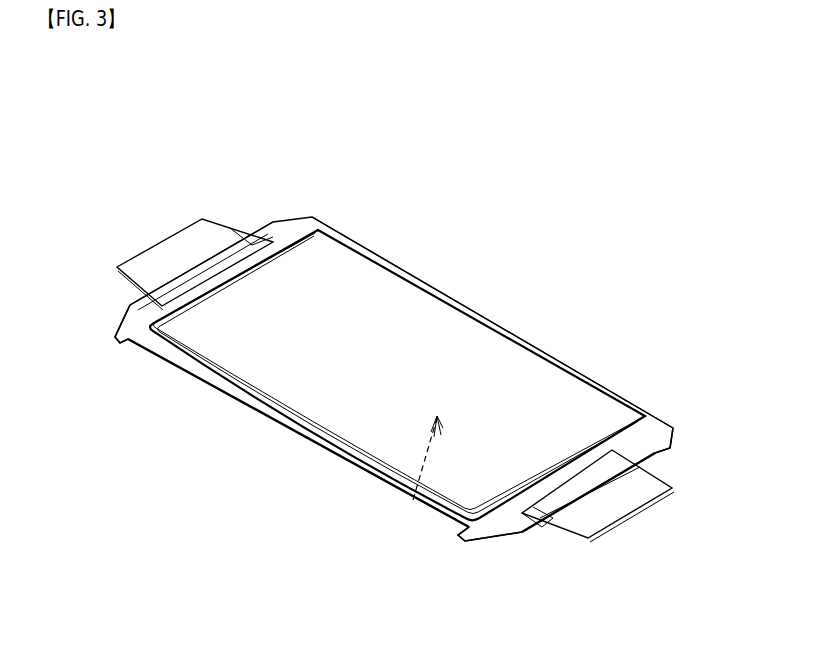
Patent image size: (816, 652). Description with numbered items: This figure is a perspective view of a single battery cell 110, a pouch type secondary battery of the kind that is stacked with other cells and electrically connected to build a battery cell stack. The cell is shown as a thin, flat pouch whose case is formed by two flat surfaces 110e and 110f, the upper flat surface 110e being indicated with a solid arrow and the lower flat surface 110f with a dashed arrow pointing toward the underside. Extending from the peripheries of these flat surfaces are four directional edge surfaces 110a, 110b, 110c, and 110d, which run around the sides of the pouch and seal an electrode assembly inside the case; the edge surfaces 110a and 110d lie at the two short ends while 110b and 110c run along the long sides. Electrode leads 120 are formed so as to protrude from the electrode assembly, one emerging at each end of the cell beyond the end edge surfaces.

The battery cell 110 is at (98, 89).
The edge surface 110a is at (143, 313).
The edge surface 110b is at (487, 321).
The edge surface 110c is at (323, 443).
The edge surface 110d is at (498, 523).
The flat surface 110e is at (383, 314).
The flat surface 110f is at (420, 493).
The electrode lead 120 is at (178, 250).